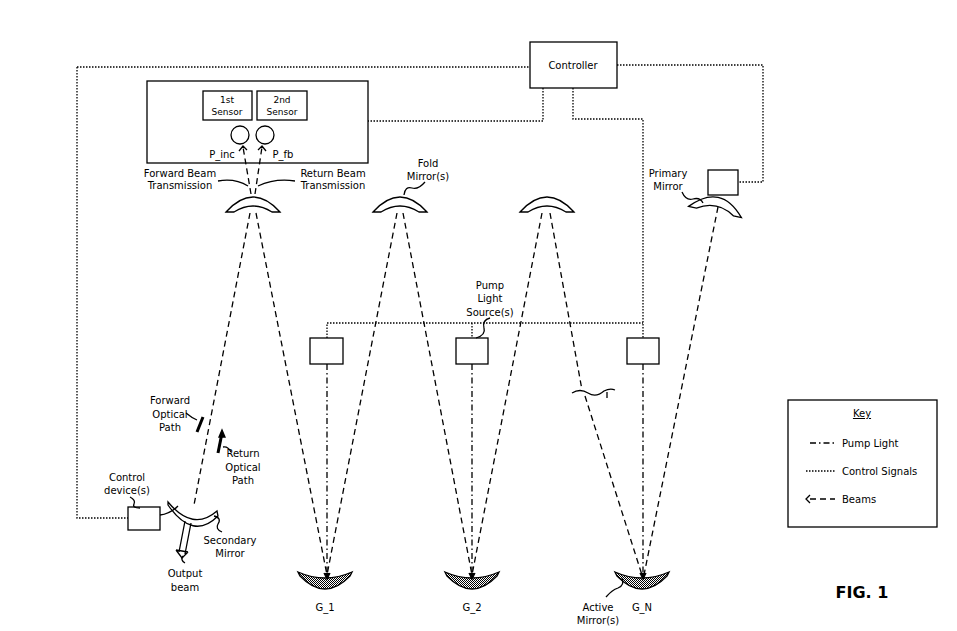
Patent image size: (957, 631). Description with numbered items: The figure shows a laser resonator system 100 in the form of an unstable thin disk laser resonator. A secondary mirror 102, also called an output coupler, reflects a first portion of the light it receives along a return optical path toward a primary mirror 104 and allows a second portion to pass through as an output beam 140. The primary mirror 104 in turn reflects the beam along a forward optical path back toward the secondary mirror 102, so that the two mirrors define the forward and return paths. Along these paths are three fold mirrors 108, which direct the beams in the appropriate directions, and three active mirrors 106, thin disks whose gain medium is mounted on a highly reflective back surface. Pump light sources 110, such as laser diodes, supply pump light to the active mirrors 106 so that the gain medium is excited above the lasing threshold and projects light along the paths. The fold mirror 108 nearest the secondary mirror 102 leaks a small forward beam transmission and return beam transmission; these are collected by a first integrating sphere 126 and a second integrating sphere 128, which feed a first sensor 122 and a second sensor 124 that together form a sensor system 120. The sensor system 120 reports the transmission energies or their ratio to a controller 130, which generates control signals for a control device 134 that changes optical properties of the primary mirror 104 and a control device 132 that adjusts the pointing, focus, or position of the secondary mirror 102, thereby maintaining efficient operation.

The laser resonator system 100 is at (110, 44).
The secondary mirror 102 is at (217, 512).
The primary mirror 104 is at (736, 220).
The active mirrors 106 is at (351, 573).
The fold mirrors 108 is at (228, 213).
The pump light sources 110 is at (484, 351).
The sensor system 120 is at (147, 97).
The first sensor 122 is at (203, 99).
The second sensor 124 is at (307, 101).
The first integrating sphere 126 is at (231, 135).
The second integrating sphere 128 is at (274, 135).
The controller 130 is at (578, 42).
The control device 132 is at (153, 518).
The control device 134 is at (723, 182).
The output beam 140 is at (178, 548).